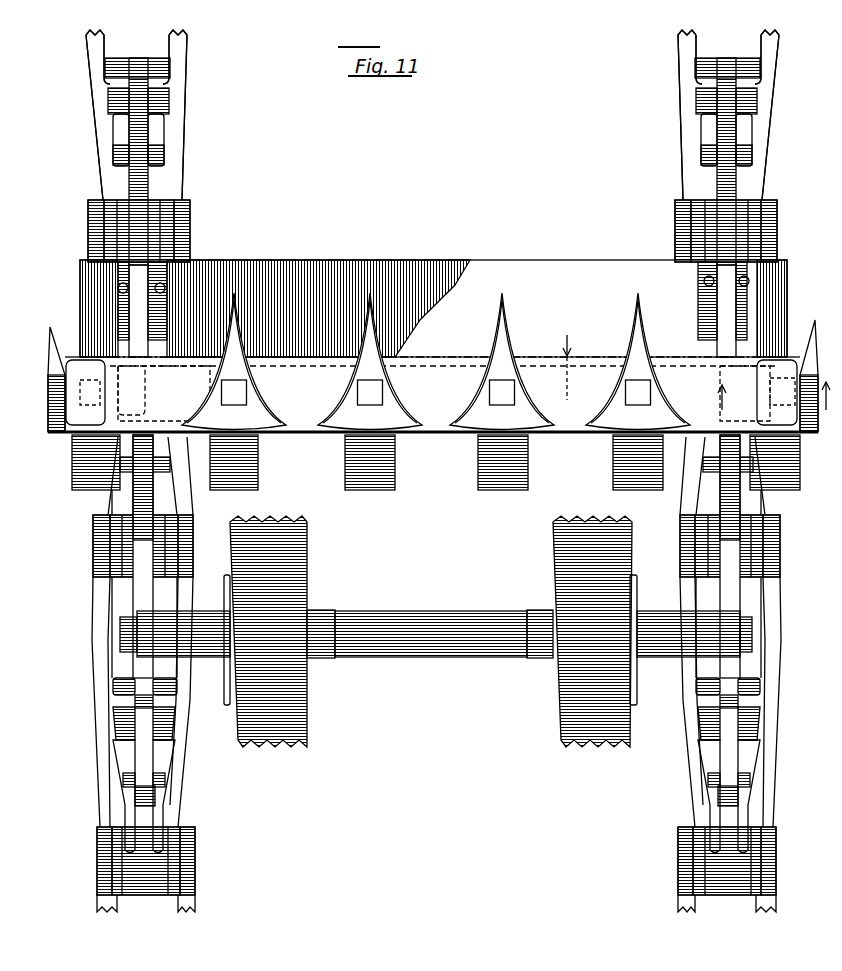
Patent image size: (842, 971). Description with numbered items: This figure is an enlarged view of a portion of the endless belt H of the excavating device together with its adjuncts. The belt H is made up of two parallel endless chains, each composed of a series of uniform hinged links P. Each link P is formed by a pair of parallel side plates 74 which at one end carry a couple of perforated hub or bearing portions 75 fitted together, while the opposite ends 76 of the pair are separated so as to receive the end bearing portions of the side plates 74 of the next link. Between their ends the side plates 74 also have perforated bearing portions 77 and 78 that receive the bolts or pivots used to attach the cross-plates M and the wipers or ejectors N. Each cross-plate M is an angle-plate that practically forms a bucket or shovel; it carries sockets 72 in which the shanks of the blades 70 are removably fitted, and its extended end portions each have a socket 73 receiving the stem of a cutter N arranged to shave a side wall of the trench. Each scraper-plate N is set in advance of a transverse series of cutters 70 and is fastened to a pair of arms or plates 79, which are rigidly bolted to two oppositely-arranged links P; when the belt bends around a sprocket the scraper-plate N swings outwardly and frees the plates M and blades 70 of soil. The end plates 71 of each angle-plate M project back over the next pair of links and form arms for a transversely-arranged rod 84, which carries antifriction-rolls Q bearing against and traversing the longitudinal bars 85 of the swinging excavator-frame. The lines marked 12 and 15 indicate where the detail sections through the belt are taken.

The section line 12 12 is at (766, 396).
The rotary shaft 15 is at (567, 383).
The blades 70 is at (237, 308).
The end plate 71 is at (140, 598).
The sockets 72 is at (262, 464).
The socket 73 is at (74, 460).
The side plates 74 is at (793, 740).
The hub or bearing portions 75 is at (104, 228).
The opposite ends 76 is at (92, 245).
The perforated bearing portions 77 is at (105, 68).
The perforated bearing portions 78 is at (112, 140).
The arms or plates 79 is at (140, 134).
The transversely-arranged rod 84 is at (444, 628).
The longitudinal bars 85 is at (310, 716).
The wipers or ejectors N is at (433, 266).
The cross-plates M is at (433, 414).
The links P is at (431, 466).
The antifriction-rolls Q is at (305, 592).
The endless belt H is at (703, 115).